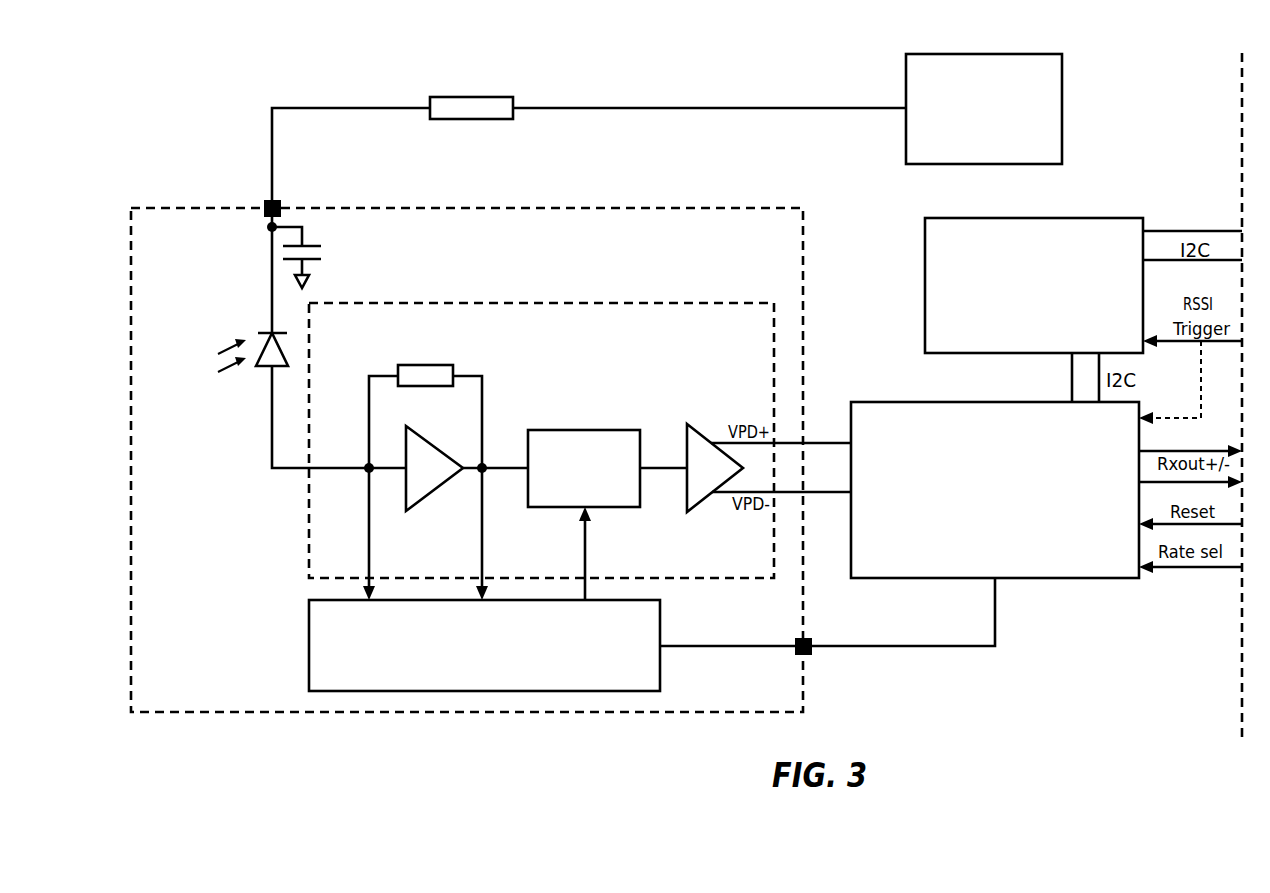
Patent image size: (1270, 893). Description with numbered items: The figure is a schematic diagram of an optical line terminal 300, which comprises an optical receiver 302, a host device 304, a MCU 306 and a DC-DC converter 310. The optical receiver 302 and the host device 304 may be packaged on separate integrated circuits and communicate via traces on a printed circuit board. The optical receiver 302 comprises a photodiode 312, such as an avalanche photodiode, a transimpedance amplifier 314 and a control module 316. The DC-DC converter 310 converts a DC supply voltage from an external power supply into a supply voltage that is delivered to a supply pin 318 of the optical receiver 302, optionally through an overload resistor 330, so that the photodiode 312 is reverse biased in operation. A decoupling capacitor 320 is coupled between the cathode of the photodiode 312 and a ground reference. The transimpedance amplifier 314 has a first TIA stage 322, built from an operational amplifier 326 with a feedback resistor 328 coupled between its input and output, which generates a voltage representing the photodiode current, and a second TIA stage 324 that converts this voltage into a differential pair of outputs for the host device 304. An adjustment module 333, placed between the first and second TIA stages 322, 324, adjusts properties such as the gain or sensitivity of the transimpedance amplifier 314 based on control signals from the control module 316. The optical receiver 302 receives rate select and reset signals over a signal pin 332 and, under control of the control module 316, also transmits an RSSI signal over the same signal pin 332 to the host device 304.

The optical line terminal 300 is at (146, 80).
The optical receiver 302 is at (176, 242).
The host device 304 is at (976, 517).
The MCU 306 is at (1015, 312).
The DC-DC converter 310 is at (965, 151).
The photodiode 312 is at (268, 372).
The transimpedance amplifier 314 is at (356, 329).
The control module 316 is at (464, 672).
The supply pin 318 is at (279, 201).
The decoupling capacitor 320 is at (318, 262).
The first TIA stage 322 is at (503, 375).
The second TIA stage 324 is at (705, 496).
The operational amplifier 326 is at (424, 497).
The feedback resistor 328 is at (433, 365).
The overload resistor 330 is at (475, 97).
The signal pin 332 is at (806, 638).
The adjustment module 333 is at (566, 494).